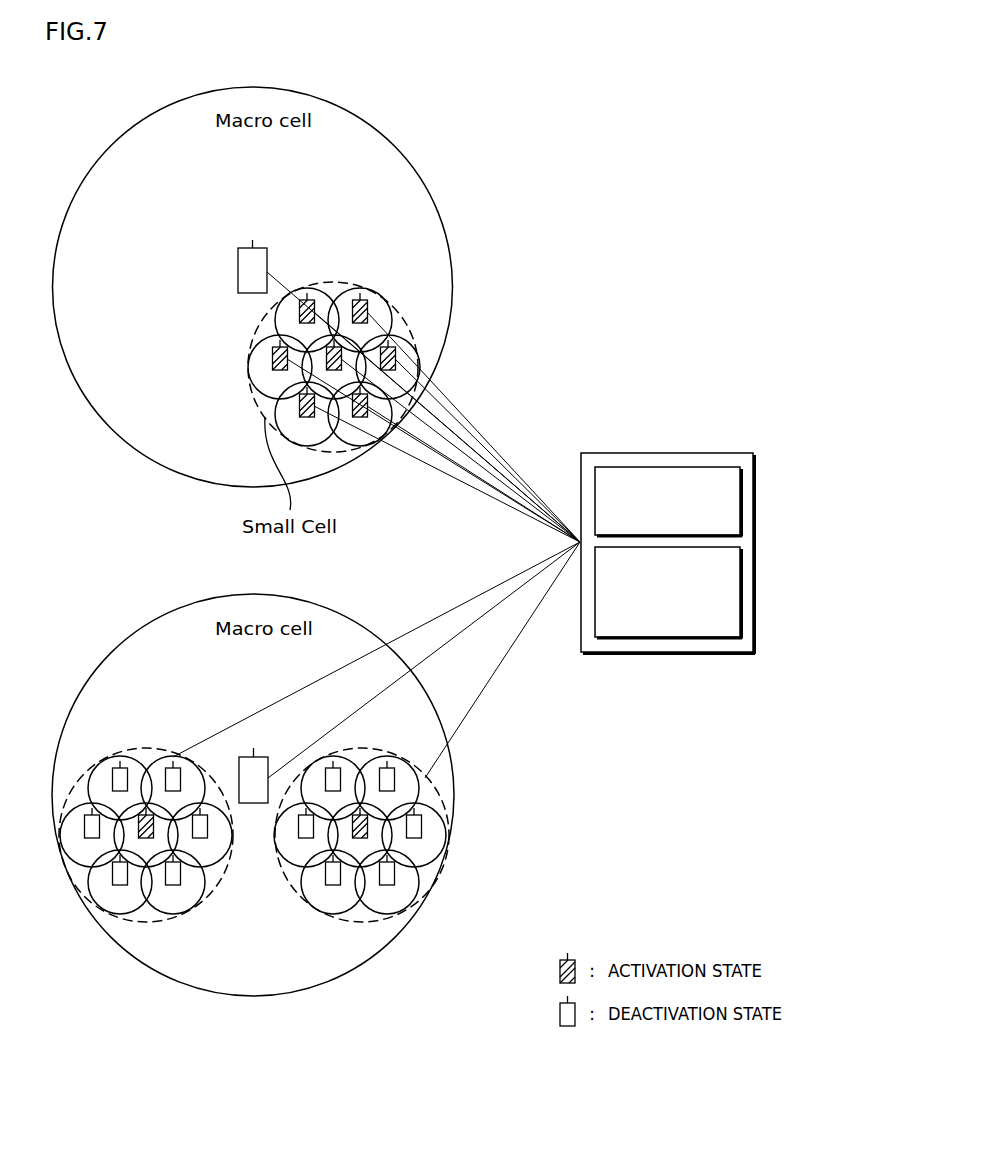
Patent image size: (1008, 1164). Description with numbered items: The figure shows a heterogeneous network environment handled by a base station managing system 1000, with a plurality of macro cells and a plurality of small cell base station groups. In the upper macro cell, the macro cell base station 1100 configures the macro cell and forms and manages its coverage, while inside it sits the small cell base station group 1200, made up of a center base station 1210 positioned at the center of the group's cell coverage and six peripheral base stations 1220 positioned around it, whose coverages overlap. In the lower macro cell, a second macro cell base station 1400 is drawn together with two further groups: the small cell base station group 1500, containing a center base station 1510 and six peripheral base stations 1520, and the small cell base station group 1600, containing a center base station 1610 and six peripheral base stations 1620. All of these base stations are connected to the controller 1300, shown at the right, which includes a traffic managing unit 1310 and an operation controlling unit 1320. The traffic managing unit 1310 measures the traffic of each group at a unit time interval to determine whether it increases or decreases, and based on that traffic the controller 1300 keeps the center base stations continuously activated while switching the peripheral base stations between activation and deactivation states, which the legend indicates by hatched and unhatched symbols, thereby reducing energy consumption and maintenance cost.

The base station managing system 1000 is at (768, 366).
The macro cell base station 1100 is at (238, 272).
The small cell base station group 1200 is at (250, 347).
The center base station 1210 is at (347, 440).
The peripheral base station 1220 is at (378, 438).
The controller 1300 is at (693, 528).
The traffic managing unit 1310 is at (743, 510).
The operation controlling unit 1320 is at (743, 592).
The second macro base station A1 1400 is at (238, 780).
The small cell base station group 1500 is at (126, 890).
The center base station 1510 is at (146, 887).
The peripheral base station 1520 is at (91, 896).
The small cell base station group 1600 is at (380, 890).
The center base station 1610 is at (365, 890).
The peripheral base station 1620 is at (397, 878).